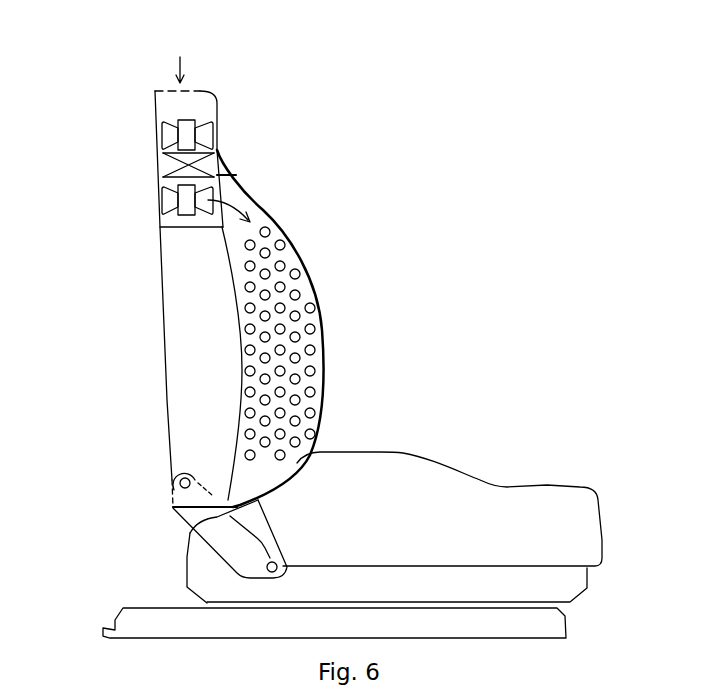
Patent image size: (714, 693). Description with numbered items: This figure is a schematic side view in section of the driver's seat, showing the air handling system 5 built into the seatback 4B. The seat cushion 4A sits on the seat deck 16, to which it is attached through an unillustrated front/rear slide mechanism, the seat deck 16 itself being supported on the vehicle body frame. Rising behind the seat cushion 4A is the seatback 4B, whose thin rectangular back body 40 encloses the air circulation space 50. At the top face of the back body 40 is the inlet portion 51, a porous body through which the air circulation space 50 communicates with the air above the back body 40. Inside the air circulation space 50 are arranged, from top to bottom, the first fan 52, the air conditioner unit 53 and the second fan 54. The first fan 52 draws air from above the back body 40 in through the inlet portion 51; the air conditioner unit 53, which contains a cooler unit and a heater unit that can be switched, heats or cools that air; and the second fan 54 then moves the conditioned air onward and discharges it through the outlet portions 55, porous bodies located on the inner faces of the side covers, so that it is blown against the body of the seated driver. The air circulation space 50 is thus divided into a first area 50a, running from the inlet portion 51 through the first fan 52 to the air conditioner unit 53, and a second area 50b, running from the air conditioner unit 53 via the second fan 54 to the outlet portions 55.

The air handling system 5 is at (173, 107).
The inlet portion 51 is at (162, 88).
The air circulation space 50 is at (195, 159).
The first area 50a is at (185, 108).
The second area 50b is at (200, 220).
The first fan 52 is at (170, 138).
The air conditioner unit 53 is at (170, 167).
The second fan 54 is at (175, 202).
The outlet portions 55 is at (290, 385).
The back body 40 is at (165, 328).
The seatback 4B is at (200, 360).
The seat cushion 4A is at (435, 480).
The seat deck 16 is at (553, 625).